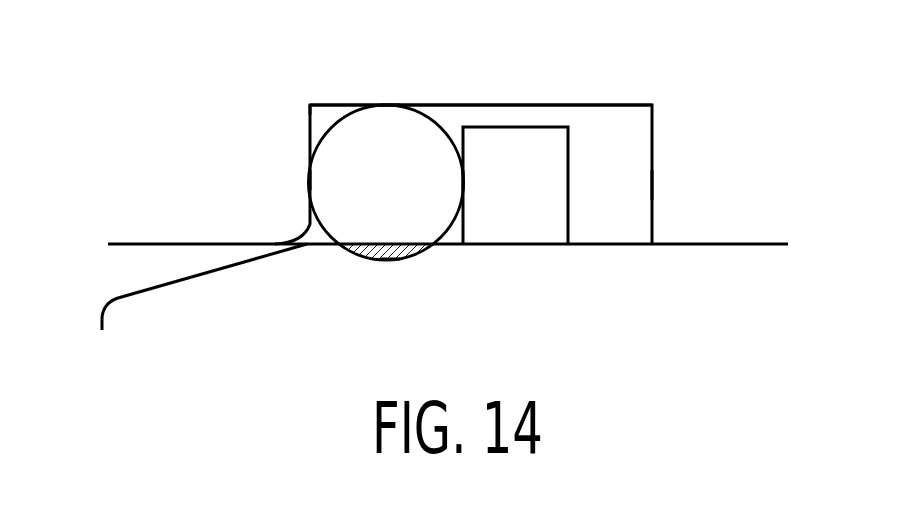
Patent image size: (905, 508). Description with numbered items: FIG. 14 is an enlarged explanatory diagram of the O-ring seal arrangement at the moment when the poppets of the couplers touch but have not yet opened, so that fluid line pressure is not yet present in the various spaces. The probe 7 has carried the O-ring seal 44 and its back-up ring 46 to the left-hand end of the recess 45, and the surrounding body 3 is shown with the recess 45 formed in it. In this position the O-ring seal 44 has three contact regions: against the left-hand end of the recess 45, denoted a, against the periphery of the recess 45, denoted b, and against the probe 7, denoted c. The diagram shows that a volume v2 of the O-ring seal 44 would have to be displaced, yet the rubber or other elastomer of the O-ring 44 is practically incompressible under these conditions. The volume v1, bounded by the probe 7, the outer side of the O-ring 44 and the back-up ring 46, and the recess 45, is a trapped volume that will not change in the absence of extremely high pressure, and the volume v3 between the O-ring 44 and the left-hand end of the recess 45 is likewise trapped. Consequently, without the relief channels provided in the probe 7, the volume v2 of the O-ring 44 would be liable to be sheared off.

The optical fiber connector body 3 is at (647, 53).
The probe 7 is at (116, 297).
The O-ring seal 44 is at (363, 132).
The recess 45 is at (583, 104).
The back-up ring 46 is at (514, 130).
The contact region against the left-hand end of the recess a is at (307, 178).
The contact region against the periphery of the recess b is at (391, 103).
The contact point c is at (465, 178).
The trapped volume between probe, O-ring, back-up ring and recess v1 is at (616, 187).
The volume of the O-ring seal to be displaced v2 is at (395, 263).
The trapped volume between O-ring and left-hand end of recess v3 is at (308, 106).